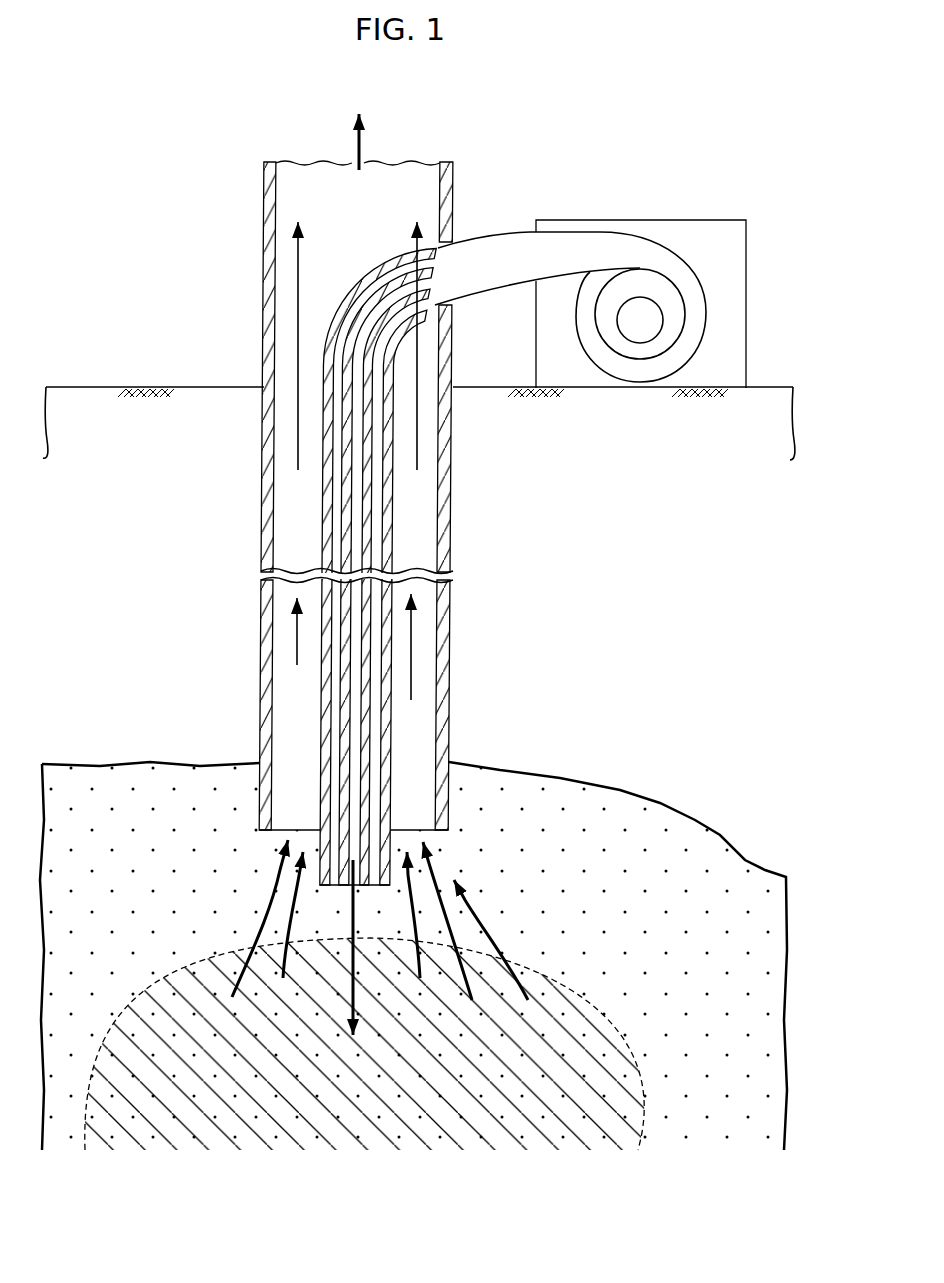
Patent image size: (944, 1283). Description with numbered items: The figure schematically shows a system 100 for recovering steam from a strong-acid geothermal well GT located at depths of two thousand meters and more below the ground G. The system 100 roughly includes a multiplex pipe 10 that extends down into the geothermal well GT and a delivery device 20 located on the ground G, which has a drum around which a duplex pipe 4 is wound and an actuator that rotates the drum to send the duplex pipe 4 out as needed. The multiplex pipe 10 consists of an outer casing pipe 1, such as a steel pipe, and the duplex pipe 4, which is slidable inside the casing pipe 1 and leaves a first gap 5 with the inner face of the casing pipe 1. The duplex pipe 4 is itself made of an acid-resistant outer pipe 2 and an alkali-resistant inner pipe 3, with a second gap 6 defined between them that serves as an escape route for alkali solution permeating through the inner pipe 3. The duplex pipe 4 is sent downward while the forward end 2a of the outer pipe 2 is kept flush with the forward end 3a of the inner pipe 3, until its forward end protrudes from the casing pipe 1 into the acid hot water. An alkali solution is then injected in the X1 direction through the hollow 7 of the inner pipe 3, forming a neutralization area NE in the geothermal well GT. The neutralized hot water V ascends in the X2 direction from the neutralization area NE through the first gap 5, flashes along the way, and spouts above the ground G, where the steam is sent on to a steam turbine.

The system 100 is at (152, 280).
The multiplex pipe 10 is at (181, 483).
The casing pipe 1 is at (265, 498).
The duplex pipe 4 is at (214, 577).
The first gap 5 is at (440, 653).
The outer pipe 2 is at (326, 588).
The inner pipe 3 is at (347, 703).
The second gap 6 is at (325, 722).
The hollow 7 is at (352, 818).
The forward end of the outer pipe 2a is at (323, 887).
The forward end of the inner pipe 3a is at (363, 887).
The delivery device 20 is at (637, 220).
The ground G is at (660, 470).
The geothermal well GT is at (118, 884).
The neutralization area NE is at (231, 1090).
The hot water V is at (380, 928).
The injection direction X1 is at (352, 963).
The ascending direction X2 is at (355, 475).